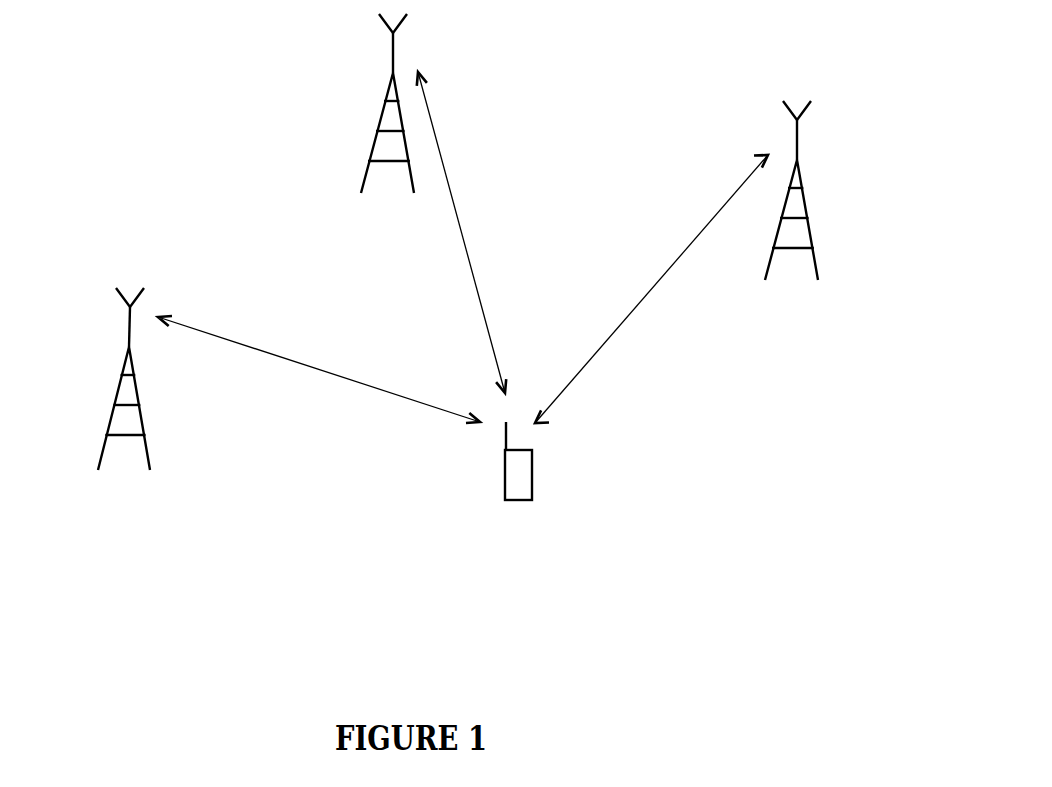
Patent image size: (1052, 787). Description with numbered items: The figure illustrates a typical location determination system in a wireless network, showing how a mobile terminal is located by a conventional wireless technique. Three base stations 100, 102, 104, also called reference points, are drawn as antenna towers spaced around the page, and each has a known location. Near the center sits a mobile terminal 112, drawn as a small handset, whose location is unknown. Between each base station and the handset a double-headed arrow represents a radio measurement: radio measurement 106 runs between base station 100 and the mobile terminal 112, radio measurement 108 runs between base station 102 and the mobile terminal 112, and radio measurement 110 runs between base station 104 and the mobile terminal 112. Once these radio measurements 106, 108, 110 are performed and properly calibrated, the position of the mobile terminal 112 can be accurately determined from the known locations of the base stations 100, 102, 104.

The base station 100 is at (87, 379).
The base station 102 is at (350, 103).
The base station 104 is at (834, 190).
The radio measurement 106 is at (319, 369).
The radio measurement 108 is at (463, 232).
The radio measurement 110 is at (651, 289).
The mobile terminal 112 is at (566, 461).